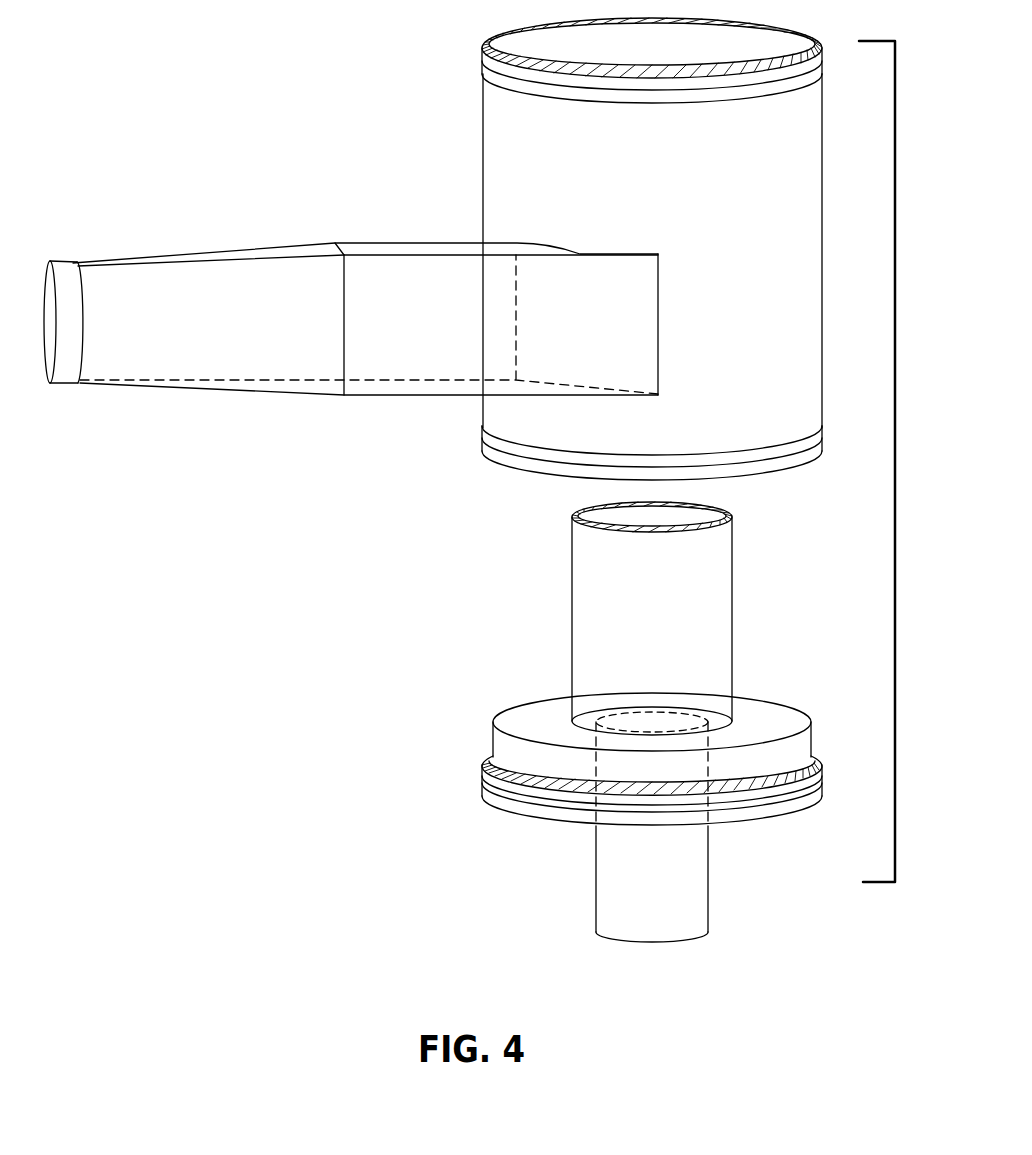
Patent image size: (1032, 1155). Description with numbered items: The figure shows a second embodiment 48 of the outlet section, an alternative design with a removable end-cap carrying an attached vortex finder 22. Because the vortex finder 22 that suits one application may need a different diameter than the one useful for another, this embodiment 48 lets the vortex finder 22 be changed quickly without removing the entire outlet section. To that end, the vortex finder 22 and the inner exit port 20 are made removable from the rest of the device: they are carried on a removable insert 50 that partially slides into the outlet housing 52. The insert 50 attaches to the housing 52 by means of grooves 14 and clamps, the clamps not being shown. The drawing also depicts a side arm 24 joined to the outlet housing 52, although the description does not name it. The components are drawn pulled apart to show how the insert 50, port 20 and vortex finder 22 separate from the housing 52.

The grooves 14 is at (483, 79).
The inner exit port 20 is at (596, 877).
The vortex finder 22 is at (572, 593).
The arm 24 is at (242, 256).
The second embodiment of the outlet section 48 is at (896, 461).
The removable insert 50 is at (477, 657).
The outlet housing 52 is at (436, 156).